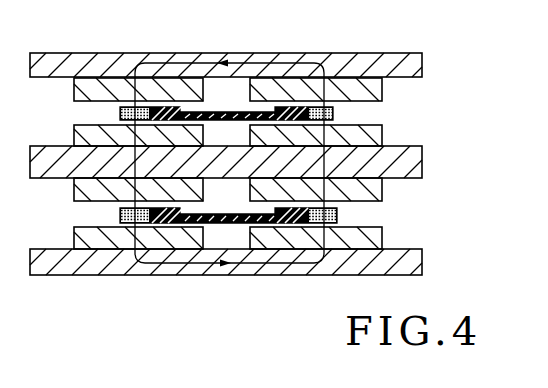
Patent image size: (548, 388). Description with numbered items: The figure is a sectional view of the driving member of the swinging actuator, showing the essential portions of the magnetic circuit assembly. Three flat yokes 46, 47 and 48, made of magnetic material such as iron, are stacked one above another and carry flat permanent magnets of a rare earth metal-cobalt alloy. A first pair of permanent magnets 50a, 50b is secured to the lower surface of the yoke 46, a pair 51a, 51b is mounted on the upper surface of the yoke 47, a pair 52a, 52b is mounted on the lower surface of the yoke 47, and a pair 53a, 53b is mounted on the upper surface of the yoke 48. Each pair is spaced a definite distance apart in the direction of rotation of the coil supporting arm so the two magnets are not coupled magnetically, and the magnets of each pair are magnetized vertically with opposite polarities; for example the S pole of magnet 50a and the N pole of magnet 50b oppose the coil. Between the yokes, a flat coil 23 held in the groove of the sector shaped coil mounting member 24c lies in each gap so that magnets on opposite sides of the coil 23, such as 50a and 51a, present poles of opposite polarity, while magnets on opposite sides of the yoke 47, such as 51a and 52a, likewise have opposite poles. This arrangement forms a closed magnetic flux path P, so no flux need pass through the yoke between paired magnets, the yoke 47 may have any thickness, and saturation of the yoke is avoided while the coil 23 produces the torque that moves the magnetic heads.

The flat yoke 46 is at (420, 65).
The flat yoke 47 is at (420, 160).
The flat yoke 48 is at (420, 263).
The permanent magnet 50a is at (87, 90).
The permanent magnet 50b is at (370, 90).
The permanent magnet 51a is at (85, 122).
The permanent magnet 51b is at (370, 137).
The permanent magnet 52a is at (87, 193).
The permanent magnet 52b is at (370, 193).
The permanent magnet 53a is at (85, 226).
The permanent magnet 53b is at (370, 238).
The flat coil 23 is at (333, 112).
The coil mounting member 24c is at (290, 107).
The closed magnetic flux path P is at (190, 275).